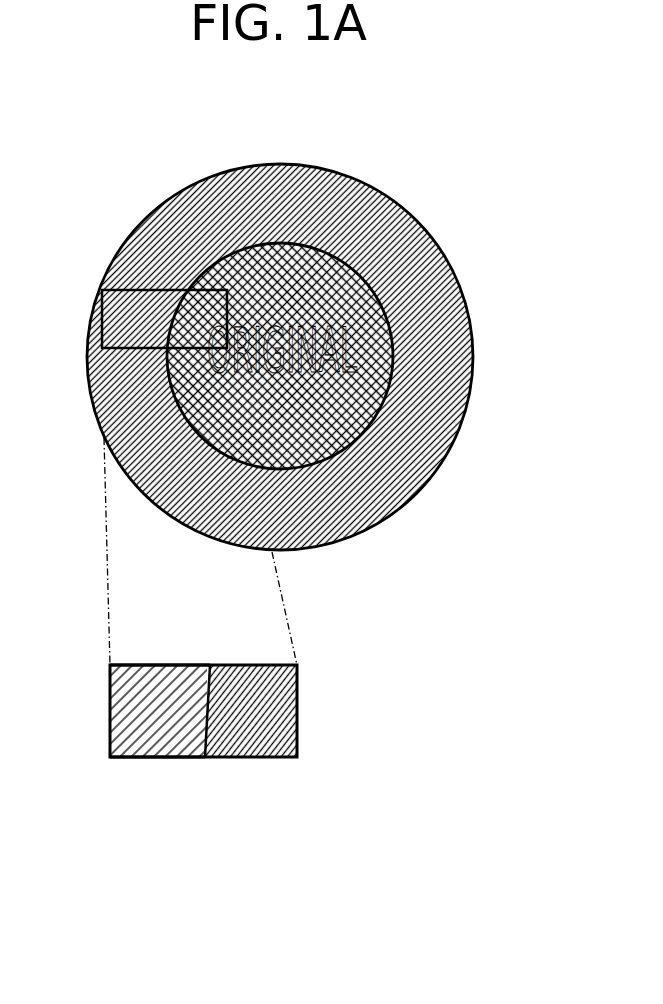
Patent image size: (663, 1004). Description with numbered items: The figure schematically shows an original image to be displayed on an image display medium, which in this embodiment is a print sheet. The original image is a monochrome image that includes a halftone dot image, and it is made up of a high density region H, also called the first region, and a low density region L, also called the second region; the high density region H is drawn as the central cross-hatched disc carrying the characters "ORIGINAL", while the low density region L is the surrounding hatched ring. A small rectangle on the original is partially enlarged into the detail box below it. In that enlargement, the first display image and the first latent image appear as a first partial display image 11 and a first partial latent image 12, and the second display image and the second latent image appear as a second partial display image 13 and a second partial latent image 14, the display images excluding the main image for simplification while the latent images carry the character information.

The first partial display image 11 is at (250, 746).
The first partial latent image 12 is at (286, 731).
The second partial display image 13 is at (148, 746).
The second partial latent image 14 is at (170, 675).
The low density region L is at (378, 190).
The high density region H is at (397, 361).